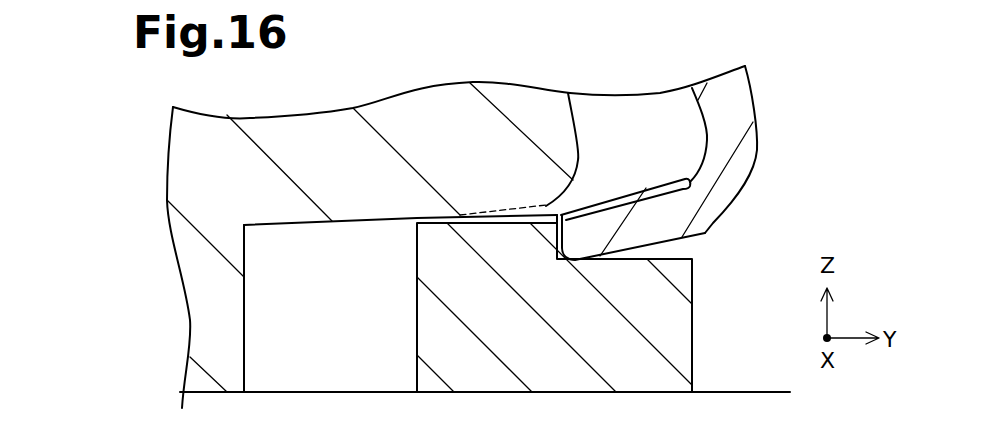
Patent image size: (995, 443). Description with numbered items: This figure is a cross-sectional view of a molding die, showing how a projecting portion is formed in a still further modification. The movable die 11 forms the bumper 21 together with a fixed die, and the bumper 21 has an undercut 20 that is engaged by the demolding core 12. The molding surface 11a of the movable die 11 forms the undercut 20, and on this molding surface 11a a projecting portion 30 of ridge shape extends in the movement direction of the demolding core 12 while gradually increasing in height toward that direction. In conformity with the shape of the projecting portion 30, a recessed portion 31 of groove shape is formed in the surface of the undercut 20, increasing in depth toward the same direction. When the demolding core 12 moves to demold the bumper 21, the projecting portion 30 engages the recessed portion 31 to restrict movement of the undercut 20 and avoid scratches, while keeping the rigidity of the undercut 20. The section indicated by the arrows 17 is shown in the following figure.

The movable die 11 is at (181, 138).
The molding surface 11a is at (280, 226).
The demolding core 12 is at (685, 342).
The section line XVII 17 is at (488, 185).
The undercut 20 is at (662, 230).
The bumper 21 is at (747, 92).
The projecting portion 30 is at (548, 222).
The recessed portion 31 is at (651, 192).